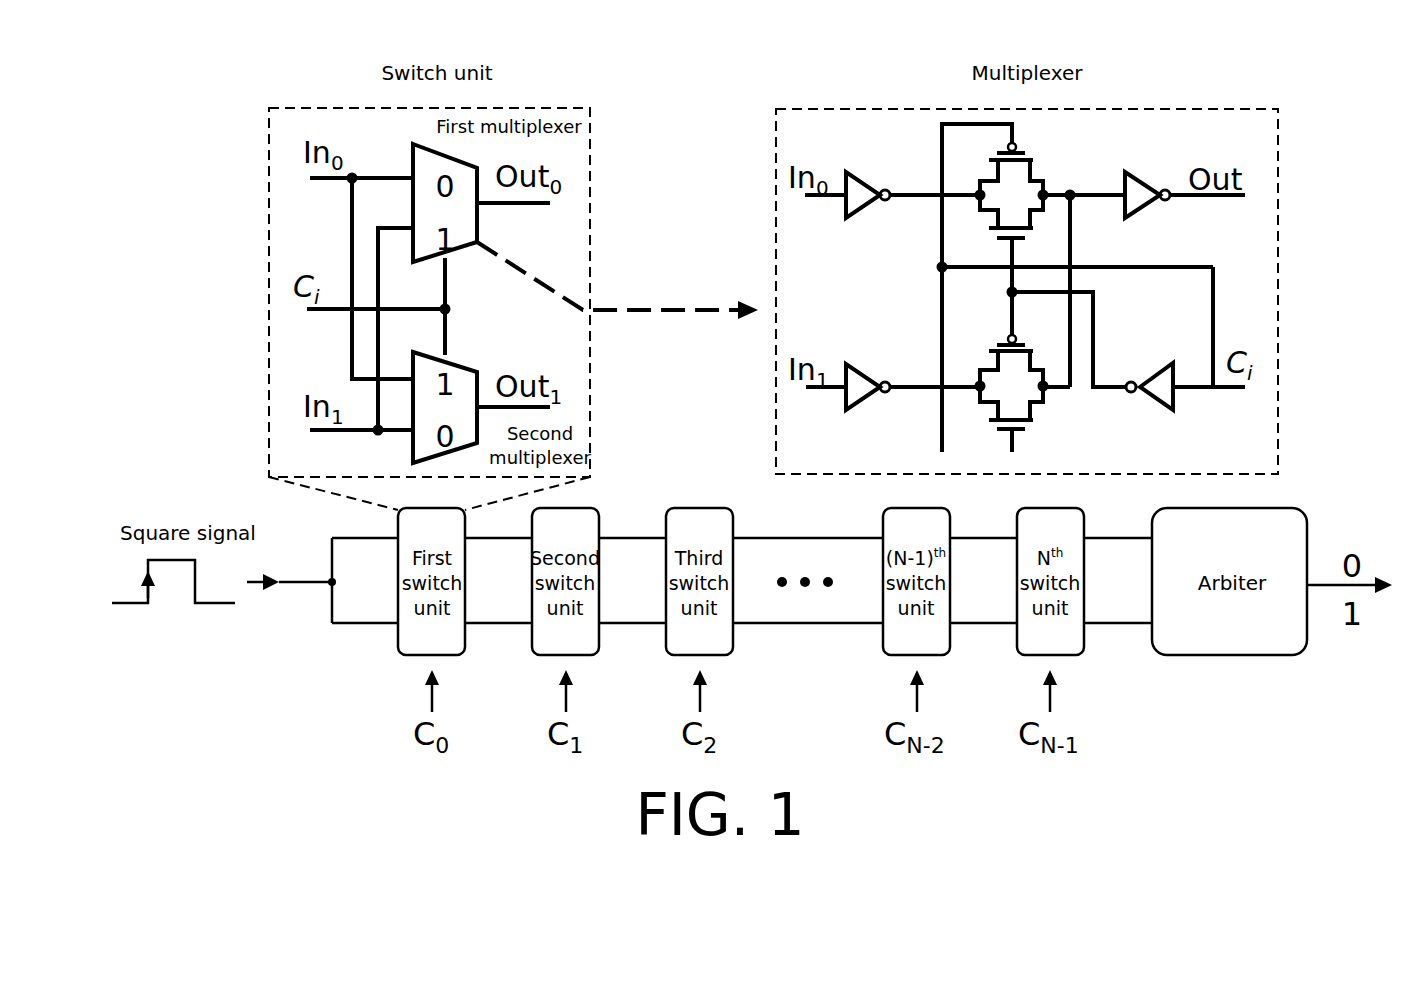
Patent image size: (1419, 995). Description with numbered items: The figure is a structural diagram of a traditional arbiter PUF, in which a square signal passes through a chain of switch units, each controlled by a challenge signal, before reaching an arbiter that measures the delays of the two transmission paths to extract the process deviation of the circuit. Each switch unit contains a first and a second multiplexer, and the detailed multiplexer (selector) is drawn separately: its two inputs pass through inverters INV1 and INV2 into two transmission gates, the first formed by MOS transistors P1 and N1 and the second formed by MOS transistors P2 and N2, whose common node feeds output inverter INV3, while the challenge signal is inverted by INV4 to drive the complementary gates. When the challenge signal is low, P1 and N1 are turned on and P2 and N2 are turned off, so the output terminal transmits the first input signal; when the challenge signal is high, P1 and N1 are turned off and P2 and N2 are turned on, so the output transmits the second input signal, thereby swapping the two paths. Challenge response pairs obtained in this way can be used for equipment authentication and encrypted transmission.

The first inverter INV1 is at (868, 212).
The second inverter INV2 is at (868, 403).
The third inverter INV3 is at (1147, 212).
The fourth inverter INV4 is at (1153, 406).
The MOS transistor P1 is at (1014, 163).
The MOS transistor N1 is at (1015, 265).
The MOS transistor N2 is at (1015, 352).
The MOS transistor P2 is at (1014, 420).